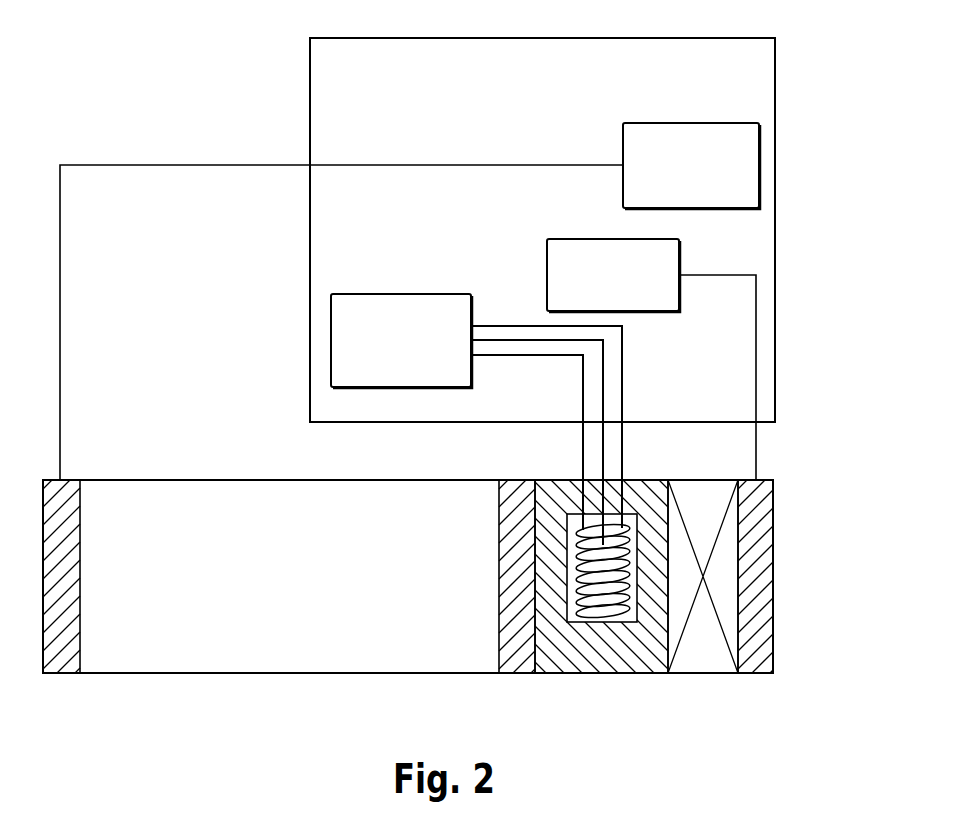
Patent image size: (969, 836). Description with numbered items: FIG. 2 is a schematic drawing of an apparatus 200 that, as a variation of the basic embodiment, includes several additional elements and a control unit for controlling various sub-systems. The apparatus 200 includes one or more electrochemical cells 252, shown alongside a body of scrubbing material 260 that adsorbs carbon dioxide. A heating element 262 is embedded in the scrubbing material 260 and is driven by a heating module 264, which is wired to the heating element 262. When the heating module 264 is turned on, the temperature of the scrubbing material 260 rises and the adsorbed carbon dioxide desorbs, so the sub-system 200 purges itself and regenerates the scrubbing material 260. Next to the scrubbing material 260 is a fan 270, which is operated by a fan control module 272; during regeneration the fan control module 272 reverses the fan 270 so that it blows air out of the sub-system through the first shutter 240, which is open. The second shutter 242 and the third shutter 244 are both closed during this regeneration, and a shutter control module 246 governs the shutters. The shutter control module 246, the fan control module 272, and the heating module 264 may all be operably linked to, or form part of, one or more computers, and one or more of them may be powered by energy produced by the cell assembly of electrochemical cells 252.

The apparatus 200 is at (211, 66).
The first shutter 240 is at (762, 520).
The second shutter 242 is at (516, 493).
The third shutter 244 is at (70, 492).
The shutter control module 246 is at (547, 252).
The electrochemical cells 252 is at (498, 673).
The scrubbing material 260 is at (650, 637).
The heating element 262 is at (613, 528).
The heating module 264 is at (407, 294).
The fan 270 is at (702, 520).
The fan control module 272 is at (645, 122).